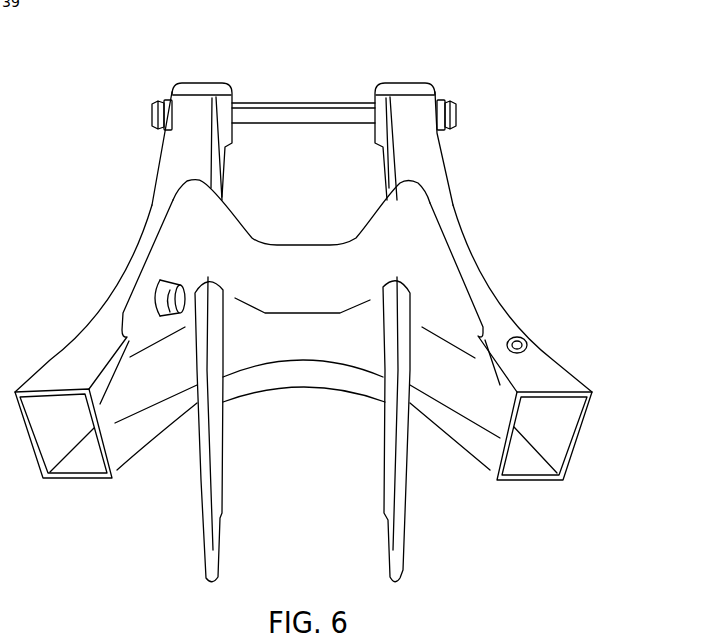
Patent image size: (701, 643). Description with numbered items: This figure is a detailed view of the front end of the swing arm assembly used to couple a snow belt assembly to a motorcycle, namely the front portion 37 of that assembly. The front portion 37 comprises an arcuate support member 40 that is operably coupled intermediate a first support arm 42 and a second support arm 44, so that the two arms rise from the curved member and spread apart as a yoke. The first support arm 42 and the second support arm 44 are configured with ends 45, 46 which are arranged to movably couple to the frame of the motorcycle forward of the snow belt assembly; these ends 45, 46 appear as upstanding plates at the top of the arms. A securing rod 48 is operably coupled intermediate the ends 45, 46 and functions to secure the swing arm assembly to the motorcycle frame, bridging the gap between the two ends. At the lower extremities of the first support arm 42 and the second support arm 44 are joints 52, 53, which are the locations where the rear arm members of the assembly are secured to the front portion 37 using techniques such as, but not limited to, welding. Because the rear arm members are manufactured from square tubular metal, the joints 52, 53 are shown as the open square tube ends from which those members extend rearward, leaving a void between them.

The front portion 37 is at (582, 168).
The arcuate support member 40 is at (337, 258).
The first support arm 42 is at (462, 255).
The second support arm 44 is at (150, 247).
The end 45 is at (412, 93).
The end 46 is at (200, 93).
The securing rod 48 is at (283, 103).
The joint 52 is at (562, 413).
The joint 53 is at (83, 463).